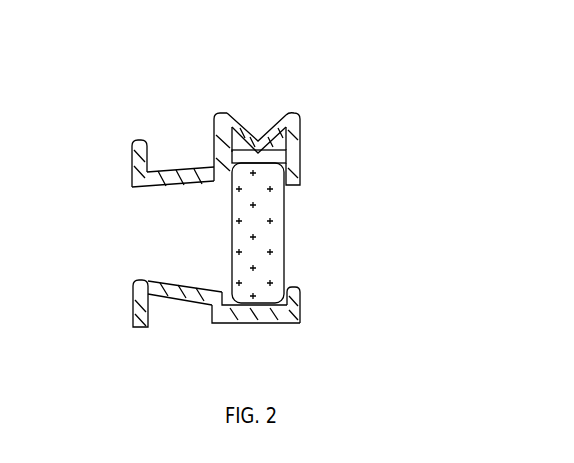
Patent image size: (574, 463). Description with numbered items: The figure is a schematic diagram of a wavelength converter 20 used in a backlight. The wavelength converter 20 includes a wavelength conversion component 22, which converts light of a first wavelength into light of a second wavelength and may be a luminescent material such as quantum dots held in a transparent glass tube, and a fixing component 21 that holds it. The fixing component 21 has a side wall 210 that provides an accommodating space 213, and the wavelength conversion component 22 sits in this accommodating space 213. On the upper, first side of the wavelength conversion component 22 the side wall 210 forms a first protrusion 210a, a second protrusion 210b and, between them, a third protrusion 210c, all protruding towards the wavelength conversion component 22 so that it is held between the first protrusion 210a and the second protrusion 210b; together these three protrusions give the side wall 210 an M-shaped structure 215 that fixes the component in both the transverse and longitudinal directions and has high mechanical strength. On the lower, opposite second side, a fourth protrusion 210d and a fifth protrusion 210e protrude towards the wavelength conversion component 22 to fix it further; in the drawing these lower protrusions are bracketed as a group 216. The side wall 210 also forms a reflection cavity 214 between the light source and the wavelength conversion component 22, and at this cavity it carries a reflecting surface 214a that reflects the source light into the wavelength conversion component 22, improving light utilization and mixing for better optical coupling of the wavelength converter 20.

The wavelength converter 20 is at (133, 66).
The fixing component 21 is at (394, 283).
The wavelength conversion component 22 is at (240, 203).
The side wall 210 is at (306, 157).
The first protrusion 210a is at (297, 142).
The second protrusion 210b is at (222, 155).
The third protrusion 210c is at (262, 150).
The fourth protrusion 210d is at (295, 293).
The fifth protrusion 210e is at (222, 293).
The accommodating space 213 is at (278, 160).
The reflection cavity 214 is at (177, 233).
The reflecting surface 214a is at (175, 180).
The M-shaped structure 215 is at (372, 74).
The lower holder segment 216 is at (348, 360).